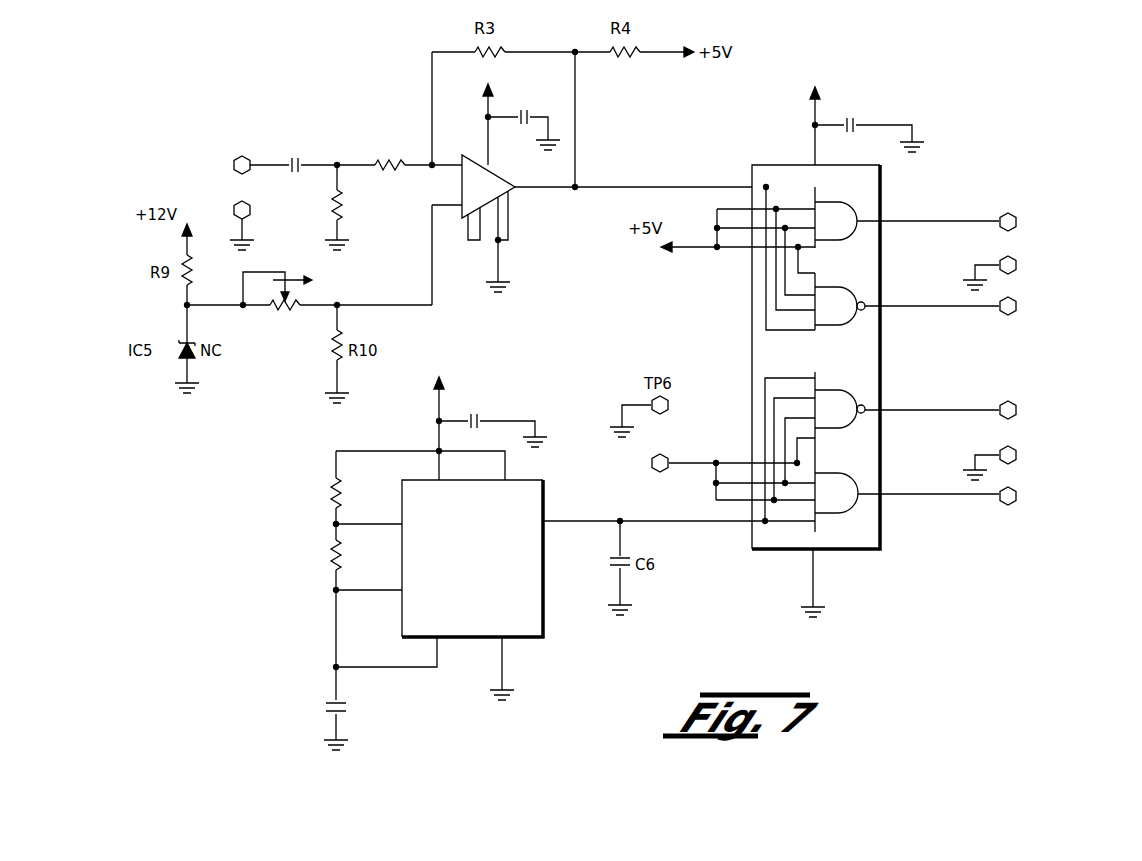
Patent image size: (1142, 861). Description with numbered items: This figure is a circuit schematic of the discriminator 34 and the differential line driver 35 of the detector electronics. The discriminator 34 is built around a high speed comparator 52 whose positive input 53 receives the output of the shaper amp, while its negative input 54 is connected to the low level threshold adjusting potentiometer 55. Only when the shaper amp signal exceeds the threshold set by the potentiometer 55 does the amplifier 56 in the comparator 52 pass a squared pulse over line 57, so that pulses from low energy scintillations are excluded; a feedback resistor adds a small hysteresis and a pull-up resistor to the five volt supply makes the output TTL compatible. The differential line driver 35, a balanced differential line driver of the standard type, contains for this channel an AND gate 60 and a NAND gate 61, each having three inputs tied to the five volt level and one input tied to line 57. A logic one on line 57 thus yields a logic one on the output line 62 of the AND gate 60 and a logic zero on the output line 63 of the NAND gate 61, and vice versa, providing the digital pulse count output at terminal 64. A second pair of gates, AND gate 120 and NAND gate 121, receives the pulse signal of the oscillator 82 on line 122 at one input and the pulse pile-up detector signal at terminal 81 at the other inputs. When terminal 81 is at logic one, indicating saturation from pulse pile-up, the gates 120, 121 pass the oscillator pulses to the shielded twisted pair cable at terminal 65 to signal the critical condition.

The discriminator 34 is at (240, 80).
The high speed comparator 52 is at (407, 62).
The positive input 53 is at (441, 162).
The negative input 54 is at (431, 277).
The low level threshold adjusting potentiometer 55 is at (288, 307).
The amplifier 56 is at (500, 182).
The line 57 is at (615, 186).
The differential line driver 35 is at (788, 163).
The AND gate 60 is at (852, 205).
The NAND gate 61 is at (855, 290).
The output line 62 is at (949, 220).
The output line 63 is at (953, 308).
The terminal 64 is at (1067, 210).
The terminal 65 is at (1067, 398).
The terminal 81 is at (668, 453).
The oscillator 82 is at (544, 636).
The AND gate 120 is at (832, 515).
The NAND gate 121 is at (855, 392).
The line 122 is at (602, 523).